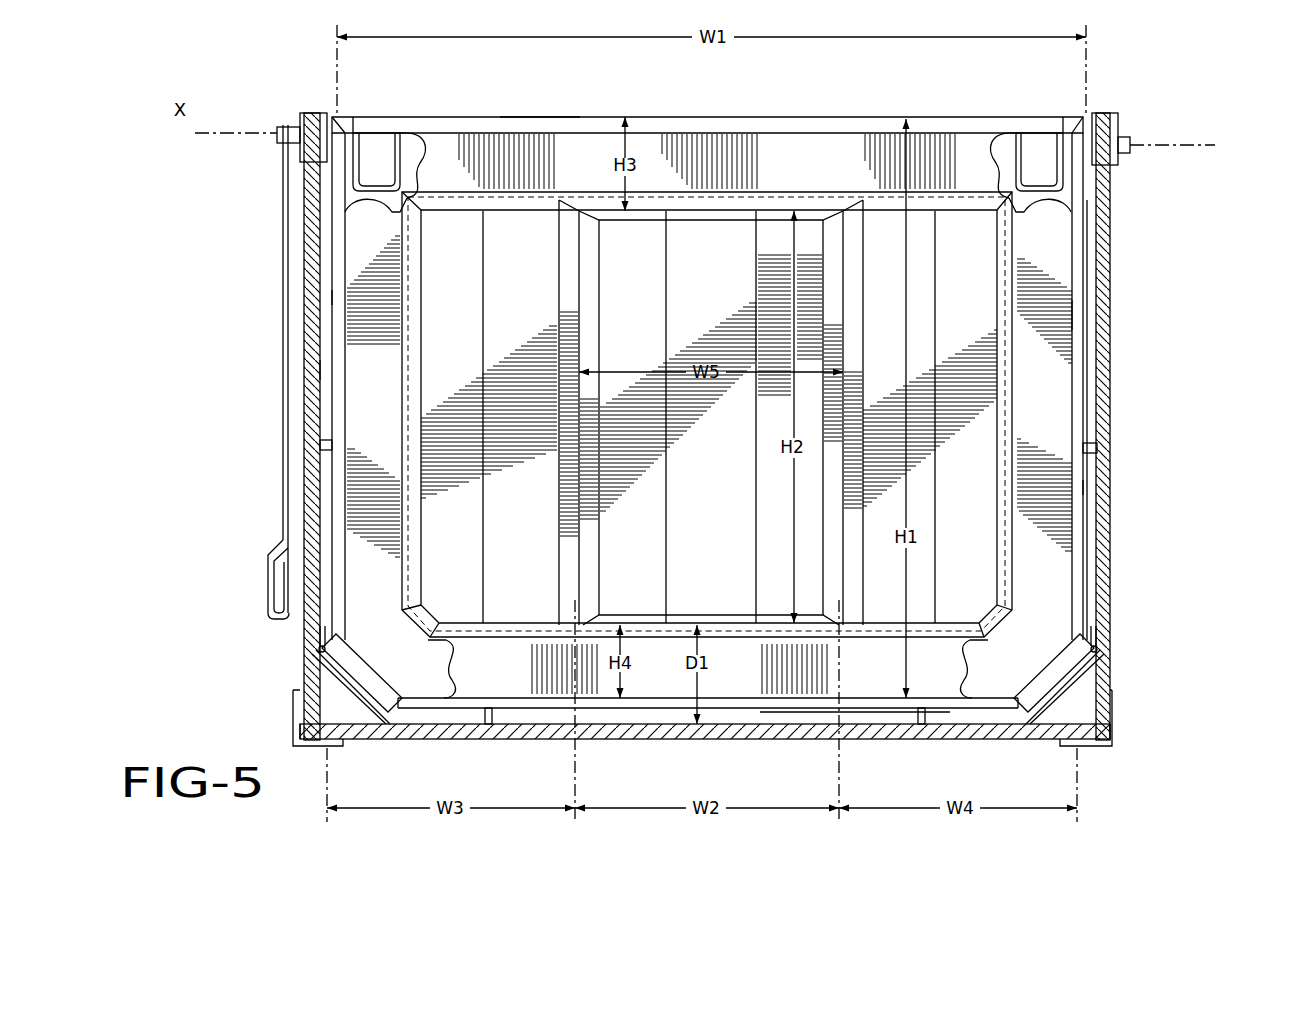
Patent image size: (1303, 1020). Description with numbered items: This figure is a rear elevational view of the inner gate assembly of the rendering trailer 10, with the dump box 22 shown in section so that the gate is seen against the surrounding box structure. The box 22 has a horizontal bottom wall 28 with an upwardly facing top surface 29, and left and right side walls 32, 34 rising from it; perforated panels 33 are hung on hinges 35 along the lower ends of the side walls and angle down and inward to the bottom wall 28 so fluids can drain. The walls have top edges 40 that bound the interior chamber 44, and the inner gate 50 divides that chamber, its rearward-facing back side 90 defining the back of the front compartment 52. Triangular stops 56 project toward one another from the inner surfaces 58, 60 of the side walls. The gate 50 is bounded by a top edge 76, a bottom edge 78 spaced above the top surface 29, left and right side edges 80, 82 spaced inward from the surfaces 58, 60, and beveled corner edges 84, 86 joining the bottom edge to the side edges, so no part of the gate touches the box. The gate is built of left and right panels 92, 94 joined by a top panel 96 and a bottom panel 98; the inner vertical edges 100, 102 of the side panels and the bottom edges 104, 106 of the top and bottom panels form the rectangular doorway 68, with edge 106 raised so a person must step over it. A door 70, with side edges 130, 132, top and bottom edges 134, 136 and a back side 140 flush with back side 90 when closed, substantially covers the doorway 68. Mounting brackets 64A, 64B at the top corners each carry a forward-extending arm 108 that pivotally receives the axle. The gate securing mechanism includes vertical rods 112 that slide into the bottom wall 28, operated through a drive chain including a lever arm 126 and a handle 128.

The rendering trailer 10 is at (1168, 215).
The dump box 22 is at (1112, 272).
The bottom wall 28 is at (467, 740).
The top surface 29 is at (870, 722).
The left side wall 32 is at (307, 632).
The perforated panels 33 is at (362, 695).
The right side wall 34 is at (1112, 315).
The hinges 35 is at (325, 640).
The top edge 40 is at (312, 113).
The interior chamber 44 is at (380, 480).
The inner gate 50 is at (600, 116).
The front compartment 52 is at (353, 408).
The triangular stops 56 is at (320, 441).
The inner surface 58 is at (320, 368).
The inner surface 60 is at (1095, 424).
The left mounting bracket 64A is at (380, 116).
The right mounting bracket 64B is at (1040, 116).
The rectangular doorway 68 is at (580, 280).
The door 70 is at (700, 548).
The top edge 76 is at (540, 117).
The bottom edge 78 is at (765, 712).
The left side edge 80 is at (333, 295).
The right side edge 82 is at (1083, 488).
The left beveled corner edge 84 is at (367, 677).
The right beveled corner edge 86 is at (1032, 685).
The back side 90 is at (378, 330).
The left panel 92 is at (375, 270).
The right panel 94 is at (1045, 388).
The top panel 96 is at (848, 165).
The bottom panel 98 is at (662, 672).
The inner vertical edge 100 is at (583, 322).
The inner vertical edge 102 is at (850, 512).
The bottom edge 104 is at (710, 215).
The bottom edge 106 is at (717, 625).
The arm 108 is at (341, 119).
The vertical rod 112 is at (492, 716).
The lever arm 126 is at (283, 362).
The handle 128 is at (268, 578).
The left side edge 130 is at (575, 500).
The right side edge 132 is at (847, 318).
The top edge 134 is at (778, 195).
The bottom edge 136 is at (745, 636).
The back side 140 is at (694, 474).